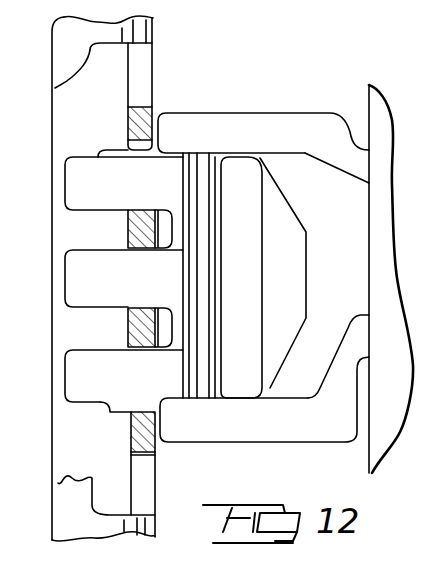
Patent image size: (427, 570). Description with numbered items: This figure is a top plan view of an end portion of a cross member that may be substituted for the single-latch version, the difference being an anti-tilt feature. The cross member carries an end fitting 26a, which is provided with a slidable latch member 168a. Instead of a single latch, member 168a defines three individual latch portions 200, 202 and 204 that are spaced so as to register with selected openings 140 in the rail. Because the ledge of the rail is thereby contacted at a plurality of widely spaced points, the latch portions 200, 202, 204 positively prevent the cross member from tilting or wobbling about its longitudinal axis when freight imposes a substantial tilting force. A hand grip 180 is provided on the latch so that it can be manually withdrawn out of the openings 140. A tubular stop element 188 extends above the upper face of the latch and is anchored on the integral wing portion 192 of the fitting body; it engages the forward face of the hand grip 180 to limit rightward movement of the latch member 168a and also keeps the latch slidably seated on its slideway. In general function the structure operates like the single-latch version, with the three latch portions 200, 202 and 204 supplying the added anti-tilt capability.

The opening 140 is at (124, 147).
The wing portion 192 is at (258, 125).
The hand grip 180 is at (245, 202).
The tubular stop element 188 is at (205, 255).
The slidable latch member 168a is at (292, 290).
The latch portion 200 is at (85, 193).
The latch portion 202 is at (80, 286).
The latch portion 204 is at (85, 383).
The end fitting 26a is at (283, 443).